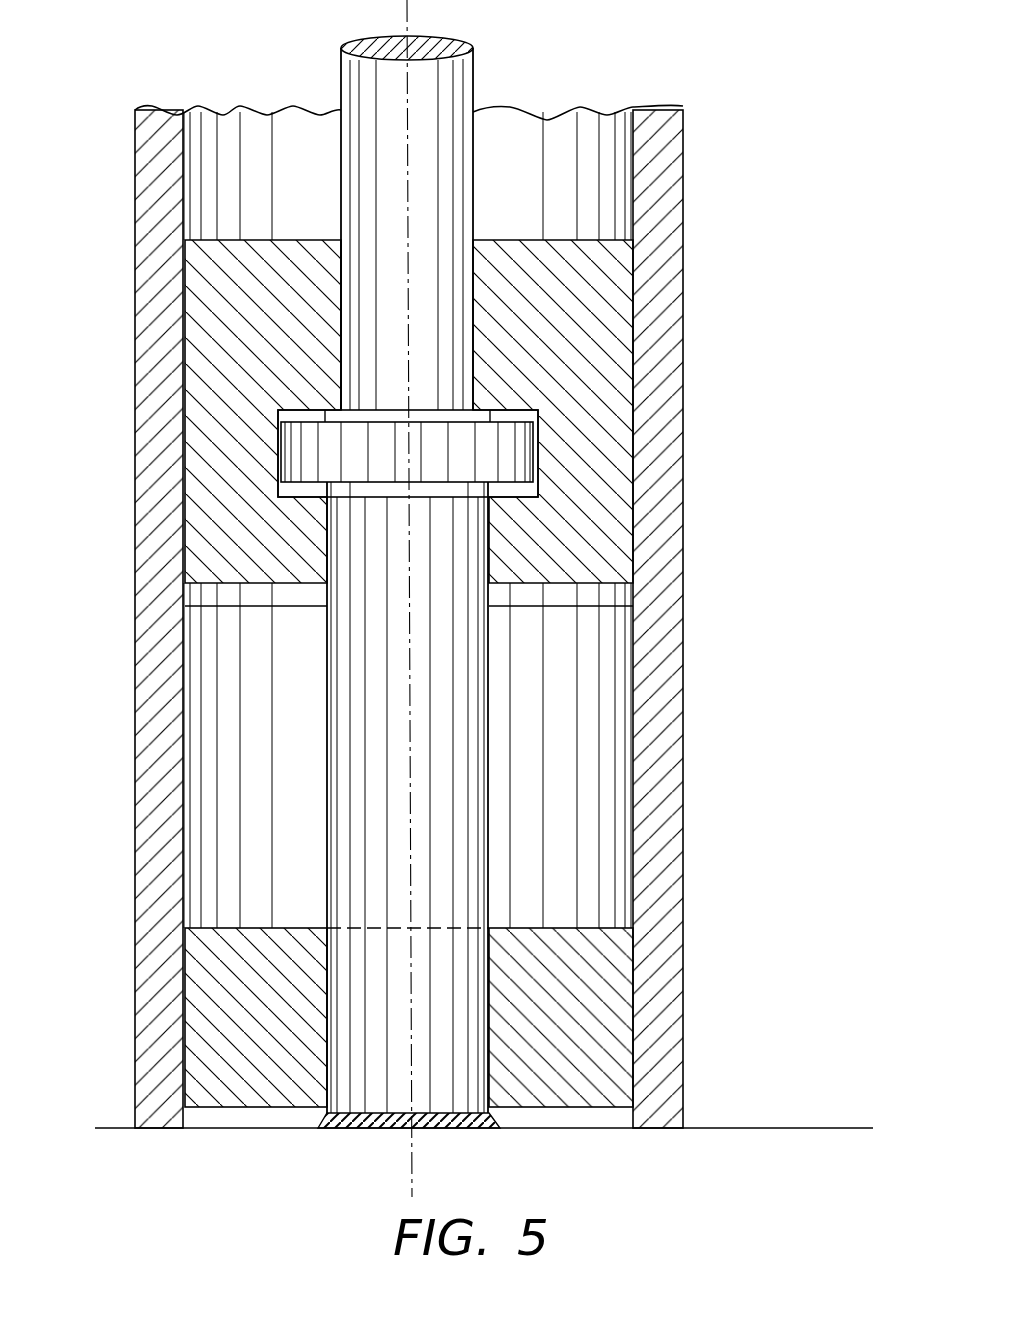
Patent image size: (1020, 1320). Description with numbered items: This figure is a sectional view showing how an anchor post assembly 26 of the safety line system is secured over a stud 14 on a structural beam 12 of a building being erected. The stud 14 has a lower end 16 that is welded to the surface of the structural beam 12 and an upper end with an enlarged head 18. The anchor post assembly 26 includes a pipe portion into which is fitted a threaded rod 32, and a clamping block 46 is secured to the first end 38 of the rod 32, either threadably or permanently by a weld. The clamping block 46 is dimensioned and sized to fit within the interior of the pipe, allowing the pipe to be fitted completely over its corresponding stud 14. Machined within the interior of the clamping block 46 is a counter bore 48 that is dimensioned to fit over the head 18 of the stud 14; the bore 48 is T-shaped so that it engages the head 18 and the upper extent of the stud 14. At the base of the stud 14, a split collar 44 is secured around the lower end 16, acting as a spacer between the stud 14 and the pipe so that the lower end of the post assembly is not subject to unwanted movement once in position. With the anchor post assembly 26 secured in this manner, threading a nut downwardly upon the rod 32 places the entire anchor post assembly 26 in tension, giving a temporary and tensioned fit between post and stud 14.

The structural beam 12 is at (765, 1127).
The stud 14 is at (460, 735).
The lower end 16 is at (500, 1127).
The enlarged head 18 is at (297, 448).
The anchor post assembly 26 is at (683, 646).
The threaded rod 32 is at (463, 87).
The first end 38 is at (340, 390).
The split collar 44 is at (597, 964).
The clamping block 46 is at (598, 312).
The counter bore 48 is at (503, 412).